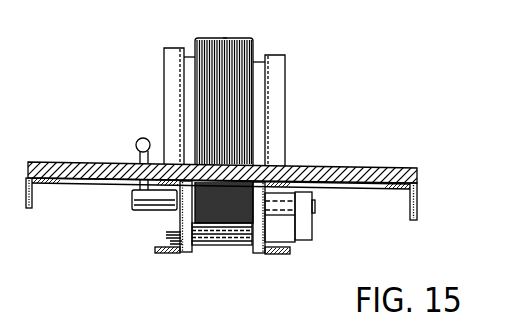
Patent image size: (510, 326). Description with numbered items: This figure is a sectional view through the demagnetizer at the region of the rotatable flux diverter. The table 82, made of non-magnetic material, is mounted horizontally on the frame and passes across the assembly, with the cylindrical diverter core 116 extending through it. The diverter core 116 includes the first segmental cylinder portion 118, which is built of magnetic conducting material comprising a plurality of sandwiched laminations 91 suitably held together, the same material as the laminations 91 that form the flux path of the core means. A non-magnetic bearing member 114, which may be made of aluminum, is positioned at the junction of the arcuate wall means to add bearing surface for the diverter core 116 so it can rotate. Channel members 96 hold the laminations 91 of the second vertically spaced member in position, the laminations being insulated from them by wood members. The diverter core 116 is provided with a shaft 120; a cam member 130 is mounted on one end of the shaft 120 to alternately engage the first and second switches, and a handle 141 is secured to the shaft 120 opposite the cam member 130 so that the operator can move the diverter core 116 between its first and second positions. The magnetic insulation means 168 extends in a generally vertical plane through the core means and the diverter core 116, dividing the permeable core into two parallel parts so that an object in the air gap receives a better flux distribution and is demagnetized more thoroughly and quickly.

The table 82 is at (322, 170).
The laminations 91 is at (236, 40).
The magnetic insulation means 168 is at (225, 38).
The non-magnetic bearing member 114 is at (184, 254).
The channel members 96 is at (172, 254).
The cylindrical diverter core 116 is at (178, 233).
The first segmental cylinder portion 118 is at (172, 243).
The handle 141 is at (136, 143).
The shaft 120 is at (132, 200).
The cam member 130 is at (303, 221).